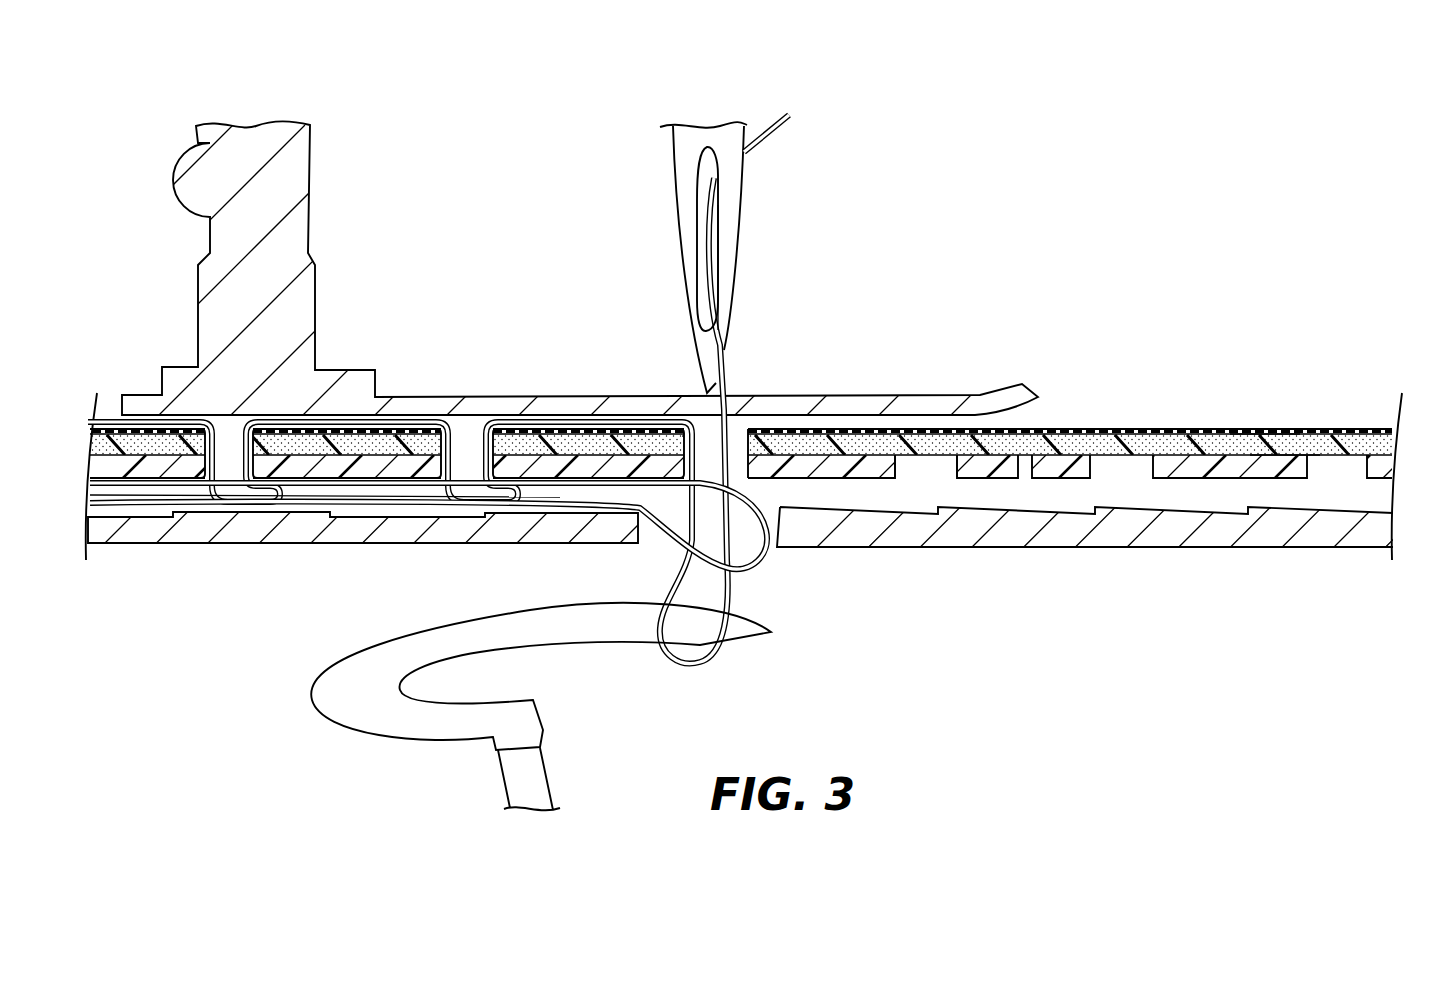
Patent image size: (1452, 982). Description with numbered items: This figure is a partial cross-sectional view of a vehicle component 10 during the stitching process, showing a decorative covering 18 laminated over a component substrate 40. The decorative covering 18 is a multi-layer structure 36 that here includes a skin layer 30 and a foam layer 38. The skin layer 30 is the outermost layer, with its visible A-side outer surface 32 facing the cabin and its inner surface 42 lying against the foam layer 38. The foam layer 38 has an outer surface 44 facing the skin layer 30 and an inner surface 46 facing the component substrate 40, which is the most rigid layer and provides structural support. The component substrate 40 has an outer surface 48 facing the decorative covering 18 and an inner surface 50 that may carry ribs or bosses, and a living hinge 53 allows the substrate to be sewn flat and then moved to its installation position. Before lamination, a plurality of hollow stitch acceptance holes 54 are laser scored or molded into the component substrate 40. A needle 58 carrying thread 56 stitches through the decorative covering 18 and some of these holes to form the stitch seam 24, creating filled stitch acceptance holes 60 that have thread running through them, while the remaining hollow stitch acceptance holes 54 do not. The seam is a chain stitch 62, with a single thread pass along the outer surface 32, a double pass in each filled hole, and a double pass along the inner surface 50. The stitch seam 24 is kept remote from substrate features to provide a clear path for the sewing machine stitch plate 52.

The vehicle component 10 is at (1115, 389).
The decorative covering 18 is at (1262, 431).
The stitch seam 24 is at (508, 424).
The skin layer 30 is at (820, 429).
The outer surface 32 is at (1127, 429).
The multi-layer structure 36 is at (770, 442).
The foam layer 38 is at (967, 429).
The component substrate 40 is at (1390, 472).
The inner surface 42 is at (1348, 458).
The outer surface 44 is at (896, 429).
The inner surface 46 is at (913, 456).
The outer surface 48 is at (1288, 455).
The inner surface 50 is at (1290, 481).
The sewing machine stitch plate 52 is at (278, 543).
The living hinge 53 is at (1053, 452).
The hollow stitch acceptance holes 54 is at (1105, 476).
The thread 56 is at (726, 364).
The needle 58 is at (681, 173).
The filled stitch acceptance holes 60 is at (229, 434).
The chain stitch 62 is at (217, 506).